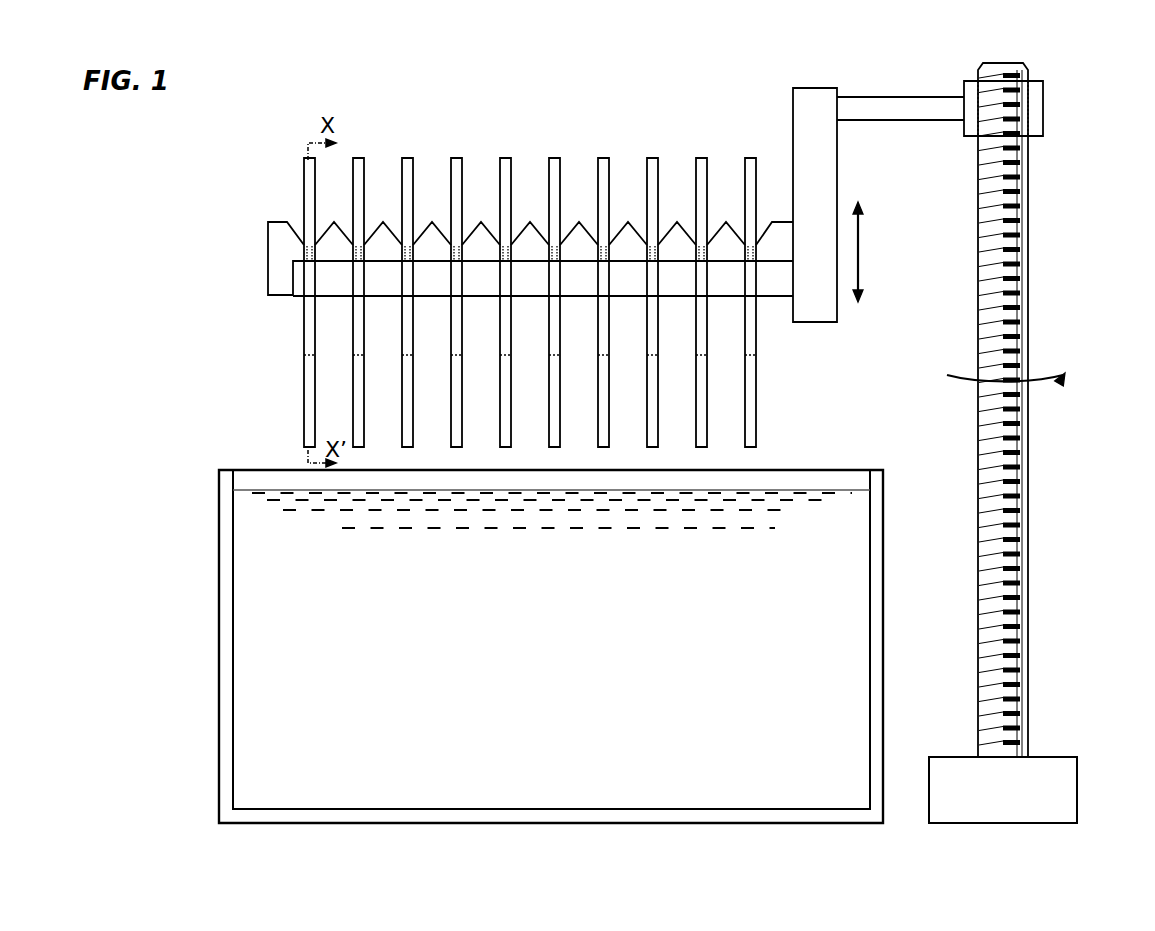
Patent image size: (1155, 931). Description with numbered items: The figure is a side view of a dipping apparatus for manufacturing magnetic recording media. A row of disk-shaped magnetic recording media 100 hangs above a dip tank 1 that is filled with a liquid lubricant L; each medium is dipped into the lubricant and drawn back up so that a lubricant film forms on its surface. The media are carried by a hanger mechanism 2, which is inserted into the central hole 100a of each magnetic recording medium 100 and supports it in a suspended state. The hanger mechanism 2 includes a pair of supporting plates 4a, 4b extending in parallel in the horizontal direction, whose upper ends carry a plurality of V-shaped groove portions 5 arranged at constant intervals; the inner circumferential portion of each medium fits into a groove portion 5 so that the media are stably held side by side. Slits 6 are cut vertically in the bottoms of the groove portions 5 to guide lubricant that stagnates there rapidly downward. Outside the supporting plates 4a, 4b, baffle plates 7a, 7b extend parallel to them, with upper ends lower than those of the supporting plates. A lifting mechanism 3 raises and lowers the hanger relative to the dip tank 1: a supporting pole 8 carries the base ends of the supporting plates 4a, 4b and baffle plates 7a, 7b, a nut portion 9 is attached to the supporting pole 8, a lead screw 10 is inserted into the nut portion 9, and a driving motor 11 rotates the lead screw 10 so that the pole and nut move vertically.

The dip tank 1 is at (219, 629).
The liquid lubricant L is at (830, 490).
The hanger mechanism 2 is at (528, 199).
The lifting mechanism 3 is at (1027, 410).
The supporting plate 4a is at (228, 253).
The supporting plate 4b is at (268, 237).
The V-shaped groove portion 5 is at (303, 243).
The slit 6 is at (303, 252).
The baffle plate 7a is at (480, 293).
The baffle plate 7b is at (299, 293).
The supporting pole 8 is at (837, 167).
The nut portion 9 is at (1043, 110).
The lead screw 10 is at (1032, 533).
The driving motor 11 is at (1077, 790).
The magnetic recording medium 100 is at (484, 282).
The central hole 100a is at (308, 350).